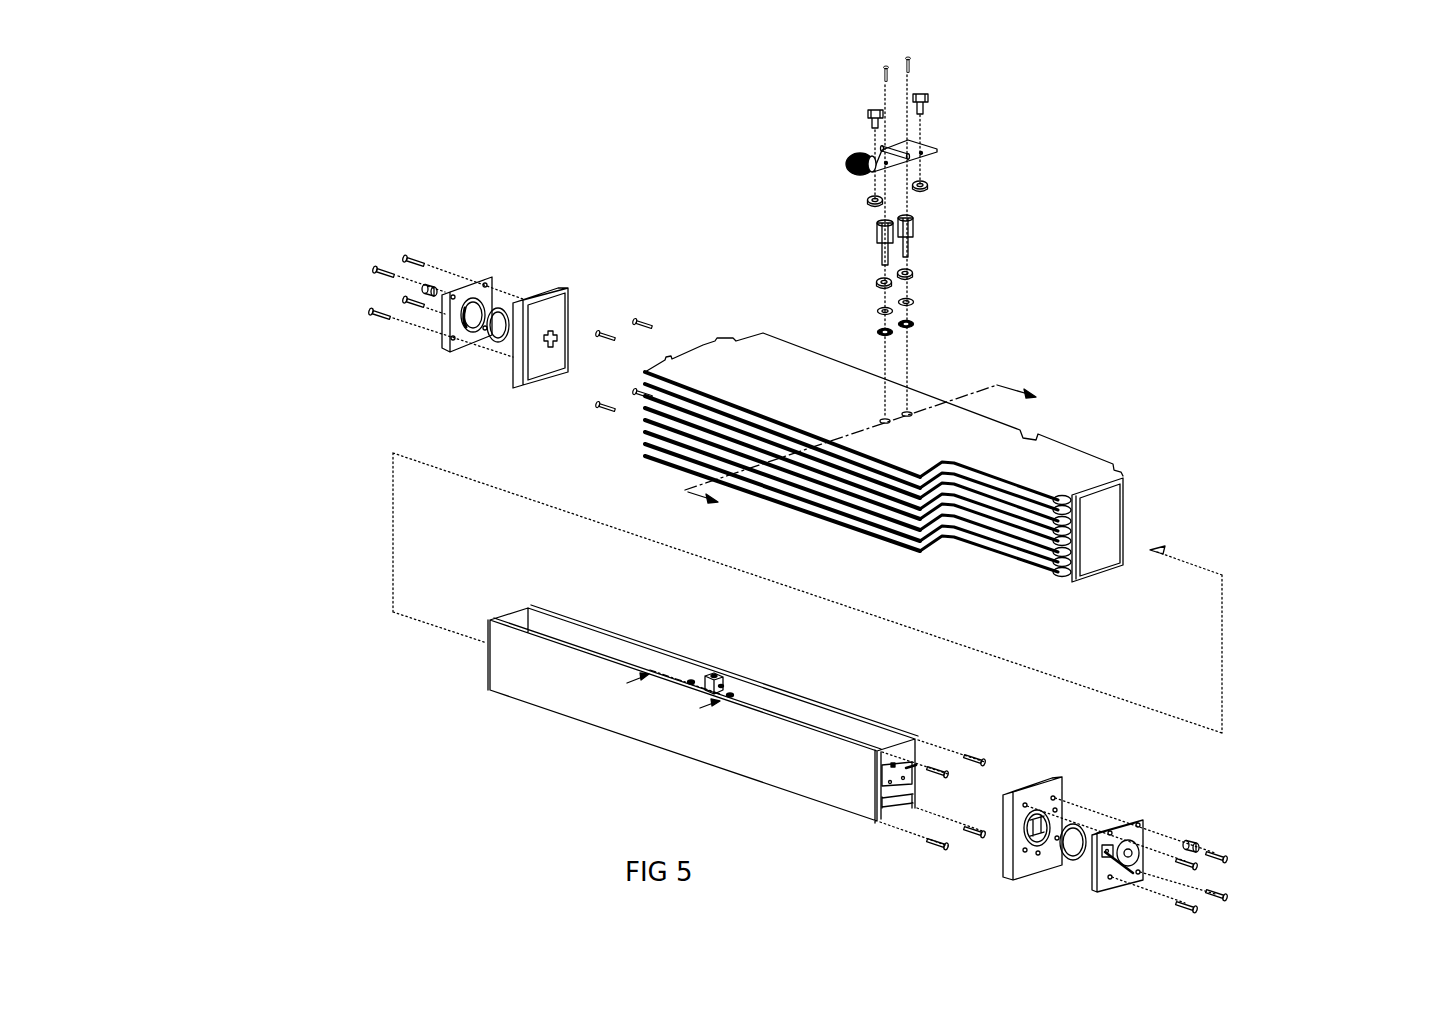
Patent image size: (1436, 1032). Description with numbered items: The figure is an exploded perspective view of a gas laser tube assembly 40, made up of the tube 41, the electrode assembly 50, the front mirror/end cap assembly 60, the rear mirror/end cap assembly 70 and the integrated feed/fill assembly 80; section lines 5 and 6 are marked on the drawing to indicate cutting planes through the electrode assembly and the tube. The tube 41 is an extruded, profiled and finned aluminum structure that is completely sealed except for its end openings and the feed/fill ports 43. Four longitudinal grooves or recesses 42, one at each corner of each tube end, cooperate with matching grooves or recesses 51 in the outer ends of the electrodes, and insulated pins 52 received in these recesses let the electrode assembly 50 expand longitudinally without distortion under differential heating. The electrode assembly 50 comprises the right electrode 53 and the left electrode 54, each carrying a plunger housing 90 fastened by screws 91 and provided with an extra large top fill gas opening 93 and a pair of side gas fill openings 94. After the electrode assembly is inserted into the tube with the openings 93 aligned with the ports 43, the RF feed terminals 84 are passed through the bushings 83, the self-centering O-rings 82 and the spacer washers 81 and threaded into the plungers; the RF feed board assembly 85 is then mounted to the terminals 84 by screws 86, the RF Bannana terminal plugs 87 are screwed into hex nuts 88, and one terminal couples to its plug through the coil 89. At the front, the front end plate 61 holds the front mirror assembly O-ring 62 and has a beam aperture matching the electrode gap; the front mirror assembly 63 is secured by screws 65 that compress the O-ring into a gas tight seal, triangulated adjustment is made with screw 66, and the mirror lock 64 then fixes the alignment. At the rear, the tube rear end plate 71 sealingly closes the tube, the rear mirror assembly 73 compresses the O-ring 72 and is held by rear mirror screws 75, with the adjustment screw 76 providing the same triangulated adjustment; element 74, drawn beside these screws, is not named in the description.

The section line 5- 5 is at (666, 697).
The section line 6- 6 is at (863, 439).
The tube assembly 40 is at (940, 429).
The tube 41 is at (763, 345).
The longitudinal grooves or recesses 42 is at (1118, 553).
The feed/fill ports 43 is at (885, 419).
The electrode assembly 50 is at (752, 574).
The longitudinal grooves or recesses 51 is at (530, 609).
The insulated pins 52 is at (980, 833).
The right electrode 53 is at (912, 771).
The left electrode 54 is at (882, 785).
The front mirror/end cap assembly 60 is at (1206, 816).
The front end plate 61 is at (1057, 776).
The front mirror assembly O-ring 62 is at (1078, 824).
The front mirror assembly 63 is at (1130, 832).
The mirror lock 64 is at (1196, 846).
The screws 65 is at (1175, 900).
The screw 66 is at (1228, 897).
The rear mirror/end cap assembly 70 is at (369, 322).
The tube rear end plate 71 is at (525, 375).
The O-ring 72 is at (496, 343).
The rear mirror assembly 73 is at (472, 293).
The nut 74 is at (429, 295).
The rear mirror screws 75 is at (368, 310).
The adjustment screw 76 is at (410, 307).
The integrated feed/fill assembly 80 is at (992, 237).
The spacer washers 81 is at (878, 331).
The O-rings 82 is at (893, 311).
The bushings 83 is at (898, 272).
The RF feed terminals 84 is at (888, 252).
The RF feed board assembly 85 is at (873, 158).
The screws 86 is at (910, 73).
The RF Bannana terminal plugs 87 is at (883, 124).
The hex nuts 88 is at (883, 201).
The coil 89 is at (850, 168).
The plunger housing 90 is at (712, 673).
The screws 91 is at (731, 694).
The top fill gas opening 93 is at (713, 672).
The side gas fill openings 94 is at (722, 684).